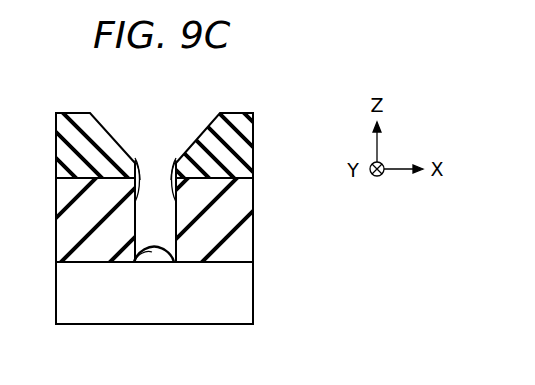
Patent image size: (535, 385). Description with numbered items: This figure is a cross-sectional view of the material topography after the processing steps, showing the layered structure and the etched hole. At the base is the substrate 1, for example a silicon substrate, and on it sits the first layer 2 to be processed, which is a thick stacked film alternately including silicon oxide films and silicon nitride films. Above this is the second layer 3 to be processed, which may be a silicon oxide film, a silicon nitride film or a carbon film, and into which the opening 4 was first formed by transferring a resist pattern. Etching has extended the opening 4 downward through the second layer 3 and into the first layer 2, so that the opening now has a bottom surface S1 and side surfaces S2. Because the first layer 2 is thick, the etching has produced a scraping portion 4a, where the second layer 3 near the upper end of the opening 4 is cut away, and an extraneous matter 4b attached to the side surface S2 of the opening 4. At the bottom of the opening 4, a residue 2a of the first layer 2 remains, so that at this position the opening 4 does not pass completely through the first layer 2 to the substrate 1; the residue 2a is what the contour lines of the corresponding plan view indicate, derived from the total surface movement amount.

The substrate 1 is at (243, 290).
The first layer to be processed 2 is at (243, 235).
The residue 2a is at (150, 257).
The second layer to be processed 3 is at (243, 141).
The opening 4 is at (160, 152).
The scraping portion 4a is at (118, 137).
The extraneous matter 4b is at (147, 165).
The bottom surface of the opening S1 is at (134, 250).
The side surface of the opening S2 is at (178, 230).